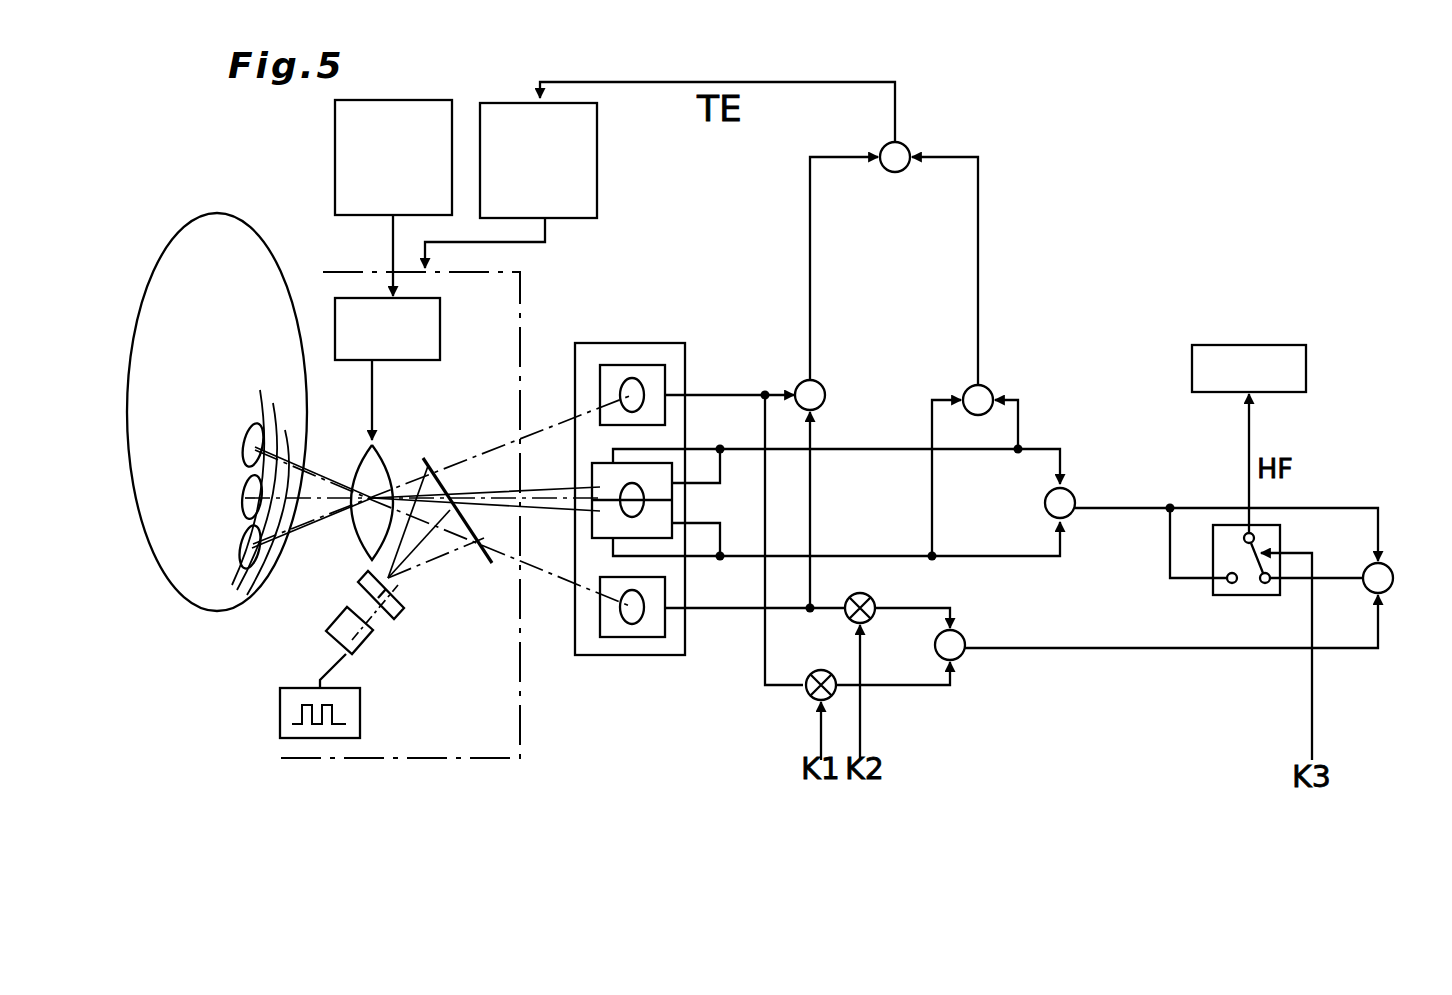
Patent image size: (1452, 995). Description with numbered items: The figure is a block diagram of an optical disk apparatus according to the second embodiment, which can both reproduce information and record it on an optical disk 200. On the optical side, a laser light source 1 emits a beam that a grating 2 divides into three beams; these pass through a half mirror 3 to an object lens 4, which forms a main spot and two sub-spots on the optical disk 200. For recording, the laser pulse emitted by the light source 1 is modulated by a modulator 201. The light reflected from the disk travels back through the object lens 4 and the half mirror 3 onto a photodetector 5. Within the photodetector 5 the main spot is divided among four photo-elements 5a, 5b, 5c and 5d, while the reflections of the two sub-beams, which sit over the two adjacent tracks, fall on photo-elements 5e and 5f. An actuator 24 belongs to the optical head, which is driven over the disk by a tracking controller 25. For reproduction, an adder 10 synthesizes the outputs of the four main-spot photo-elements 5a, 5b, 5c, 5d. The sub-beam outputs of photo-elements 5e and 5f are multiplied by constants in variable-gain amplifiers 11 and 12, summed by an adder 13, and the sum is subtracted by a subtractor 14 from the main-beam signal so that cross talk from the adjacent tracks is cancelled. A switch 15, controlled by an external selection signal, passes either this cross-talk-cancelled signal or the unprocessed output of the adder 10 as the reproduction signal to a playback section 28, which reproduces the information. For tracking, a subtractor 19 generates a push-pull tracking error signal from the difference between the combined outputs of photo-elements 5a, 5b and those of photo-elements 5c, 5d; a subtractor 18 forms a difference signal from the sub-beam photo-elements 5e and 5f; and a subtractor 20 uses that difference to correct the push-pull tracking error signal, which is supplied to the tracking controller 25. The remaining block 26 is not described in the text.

The laser light source 1 is at (370, 648).
The grating 2 is at (404, 600).
The half mirror 3 is at (425, 454).
The object lens 4 is at (370, 450).
The photodetector 5 is at (685, 343).
The photo-element 5a is at (600, 488).
The photo-element 5b is at (622, 478).
The photo-element 5c is at (636, 528).
The photo-element 5d is at (600, 512).
The photo-element 5e is at (606, 378).
The photo-element 5f is at (655, 630).
The adder 10 is at (1075, 494).
The variable-gain amplifier 11 is at (812, 698).
The variable-gain amplifier 12 is at (872, 598).
The adder 13 is at (963, 658).
The subtractor 14 is at (1393, 570).
The switch 15 is at (1265, 585).
The subtractor 18 is at (823, 386).
The subtractor 19 is at (982, 413).
The subtractor 20 is at (890, 170).
The actuator 24 is at (440, 330).
The tracking controller 25 is at (597, 163).
The track jump driver 26 is at (335, 163).
The playback section 28 is at (1250, 345).
The optical disk 200 is at (288, 290).
The modulator 201 is at (360, 716).